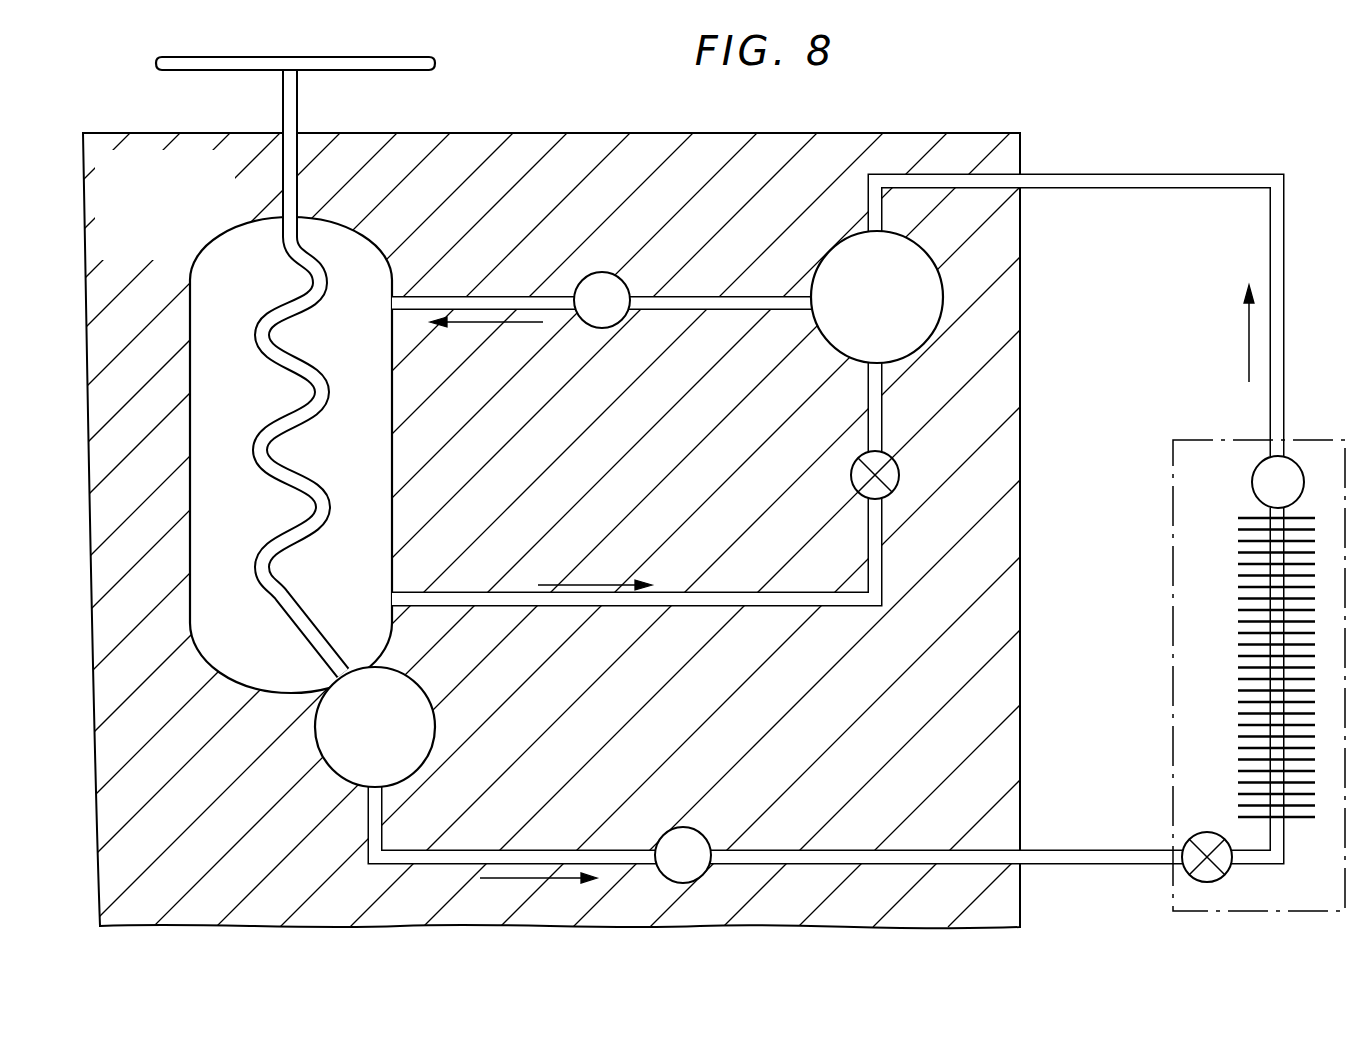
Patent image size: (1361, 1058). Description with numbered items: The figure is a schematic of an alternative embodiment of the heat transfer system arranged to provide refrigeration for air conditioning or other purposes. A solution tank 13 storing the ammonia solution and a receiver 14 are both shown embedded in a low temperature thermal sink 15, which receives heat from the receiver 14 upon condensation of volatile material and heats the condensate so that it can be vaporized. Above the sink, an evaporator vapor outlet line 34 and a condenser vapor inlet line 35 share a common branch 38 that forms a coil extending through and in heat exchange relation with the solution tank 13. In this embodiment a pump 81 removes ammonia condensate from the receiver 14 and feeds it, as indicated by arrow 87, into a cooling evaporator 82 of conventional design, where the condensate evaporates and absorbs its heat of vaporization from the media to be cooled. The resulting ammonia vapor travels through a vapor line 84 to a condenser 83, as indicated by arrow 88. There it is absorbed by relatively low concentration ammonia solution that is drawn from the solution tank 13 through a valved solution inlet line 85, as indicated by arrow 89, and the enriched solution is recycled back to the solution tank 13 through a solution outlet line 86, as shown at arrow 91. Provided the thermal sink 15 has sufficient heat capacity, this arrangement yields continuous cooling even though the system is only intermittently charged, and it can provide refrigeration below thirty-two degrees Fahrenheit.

The solution tank 13 is at (212, 337).
The receiver 14 is at (355, 767).
The thermal sink 15 is at (152, 244).
The evaporator vapor outlet line 34 is at (240, 60).
The condenser vapor inlet line 35 is at (388, 60).
The common branch 38 is at (298, 110).
The pump 81 is at (704, 830).
The cooling evaporator 82 is at (1240, 618).
The condenser 83 is at (877, 297).
The vapor line 84 is at (1195, 175).
The valved solution inlet line 85 is at (882, 561).
The solution outlet line 86 is at (457, 296).
The arrow 87 is at (515, 883).
The arrow 88 is at (1248, 342).
The arrow 89 is at (604, 585).
The arrow 91 is at (490, 323).